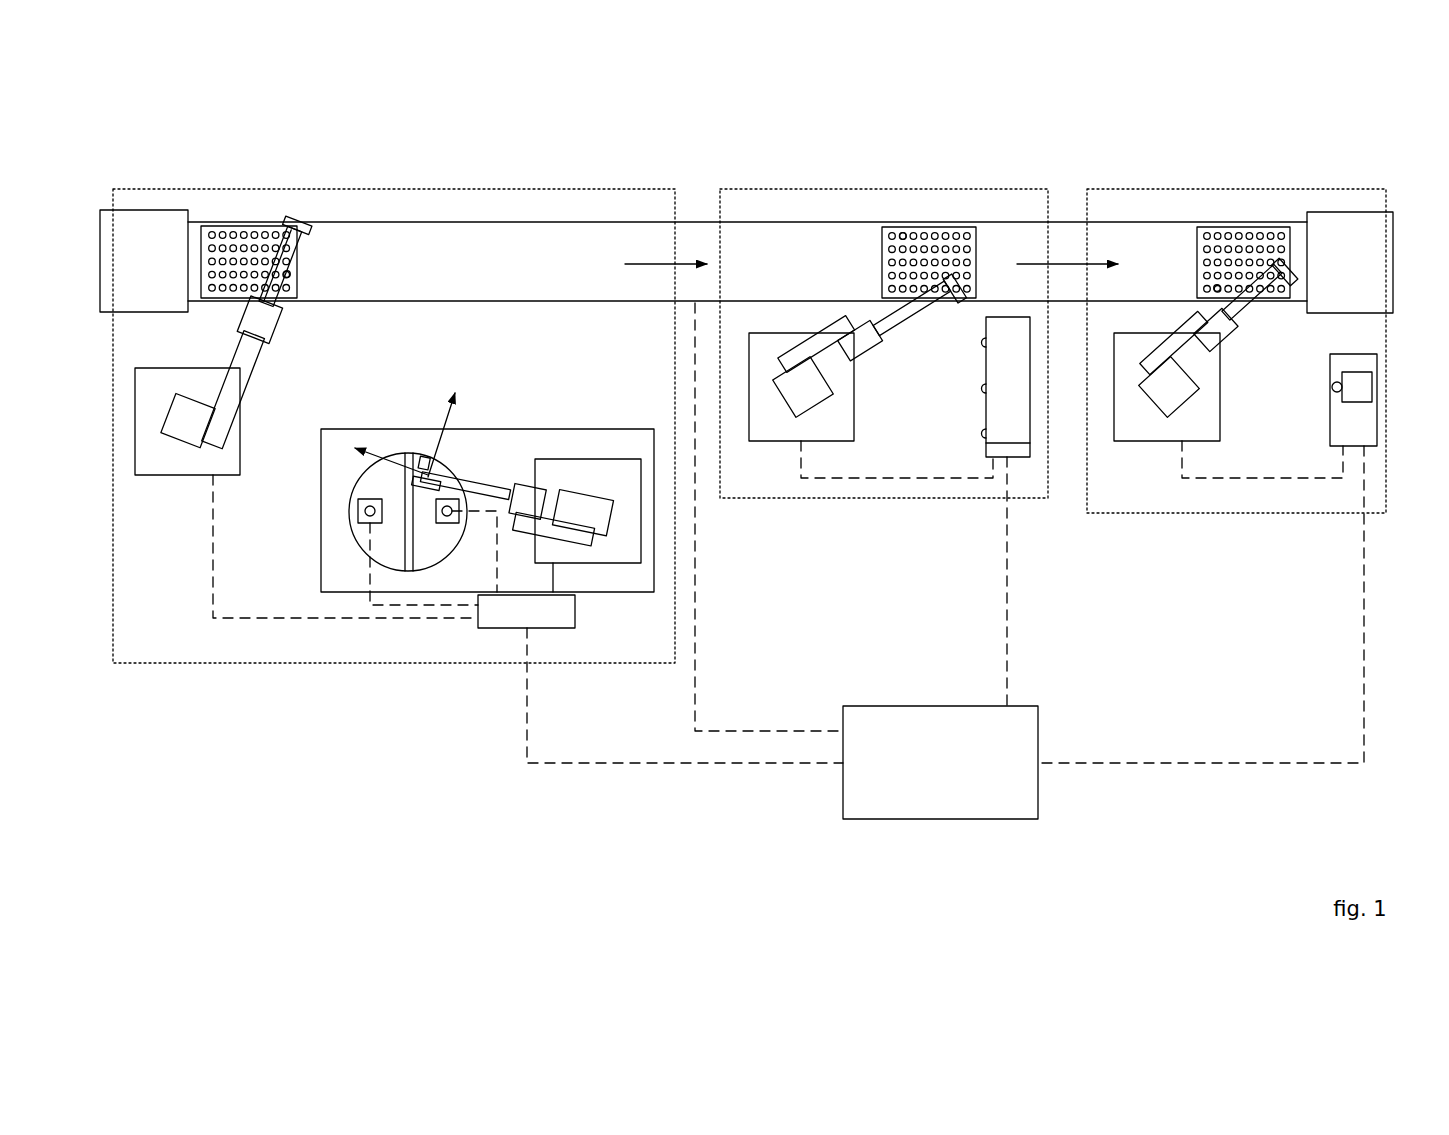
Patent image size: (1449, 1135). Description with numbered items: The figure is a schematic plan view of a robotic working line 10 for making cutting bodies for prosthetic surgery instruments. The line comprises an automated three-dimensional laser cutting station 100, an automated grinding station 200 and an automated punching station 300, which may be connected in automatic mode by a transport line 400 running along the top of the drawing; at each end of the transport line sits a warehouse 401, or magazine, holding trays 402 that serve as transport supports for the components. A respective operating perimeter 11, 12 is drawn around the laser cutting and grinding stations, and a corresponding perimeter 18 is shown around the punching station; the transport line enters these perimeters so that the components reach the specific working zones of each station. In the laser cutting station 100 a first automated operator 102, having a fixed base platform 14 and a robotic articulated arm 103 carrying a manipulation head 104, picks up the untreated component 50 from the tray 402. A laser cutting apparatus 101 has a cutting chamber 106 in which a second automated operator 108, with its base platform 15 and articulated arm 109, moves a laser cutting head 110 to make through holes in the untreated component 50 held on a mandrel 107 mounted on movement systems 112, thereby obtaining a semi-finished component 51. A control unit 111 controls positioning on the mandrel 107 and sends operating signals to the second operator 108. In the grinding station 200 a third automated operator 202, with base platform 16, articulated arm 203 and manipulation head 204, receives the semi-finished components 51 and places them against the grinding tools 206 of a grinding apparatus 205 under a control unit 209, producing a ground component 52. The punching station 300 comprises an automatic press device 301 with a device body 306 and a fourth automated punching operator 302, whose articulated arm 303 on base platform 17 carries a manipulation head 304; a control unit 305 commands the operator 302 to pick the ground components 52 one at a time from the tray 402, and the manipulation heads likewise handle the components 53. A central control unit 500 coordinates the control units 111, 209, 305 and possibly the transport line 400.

The robotic working line 10 is at (436, 98).
The operating perimeter 11 is at (169, 663).
The operating perimeter 12 is at (733, 497).
The fixed base platform 14 is at (306, 493).
The fixed base platform 15 is at (588, 525).
The fixed base platform 16 is at (871, 405).
The fixed base platform 17 is at (1228, 405).
The third work station 18 is at (1338, 189).
The untreated component 50 is at (253, 235).
The semi-finished component 51 is at (287, 274).
The ground component 52 is at (967, 289).
The component 53 is at (1217, 288).
The laser cutting station 100 is at (494, 668).
The laser cutting apparatus 101 is at (560, 430).
The first automated operator 102 is at (294, 301).
The robotic articulated arm 103 is at (272, 353).
The manipulation head 104 is at (299, 235).
The cutting chamber 106 is at (618, 430).
The mandrel 107 is at (447, 512).
The second automated operator 108 is at (538, 547).
The robotic articulated arm 109 is at (502, 478).
The laser cutting head 110 is at (424, 461).
The control unit 111 is at (660, 679).
The movement systems 112 is at (357, 540).
The grinding station 200 is at (873, 500).
The third automated operator 202 is at (779, 443).
The robotic articulated arm 203 is at (825, 328).
The manipulation head 204 is at (947, 278).
The grinding apparatus 205 is at (1008, 387).
The grinding tools 206 is at (982, 343).
The control unit 209 is at (1005, 450).
The punching station 300 is at (1207, 527).
The automatic press device 301 is at (1322, 436).
The fourth automated punching operator 302 is at (1185, 307).
The robotic articulated arm 303 is at (1158, 338).
The manipulation head 304 is at (1268, 267).
The control unit 305 is at (1354, 431).
The device body 306 is at (1365, 378).
The transport line 400 is at (695, 239).
The warehouse 401 is at (746, 261).
The tray 402 is at (221, 223).
The central control unit 500 is at (940, 762).